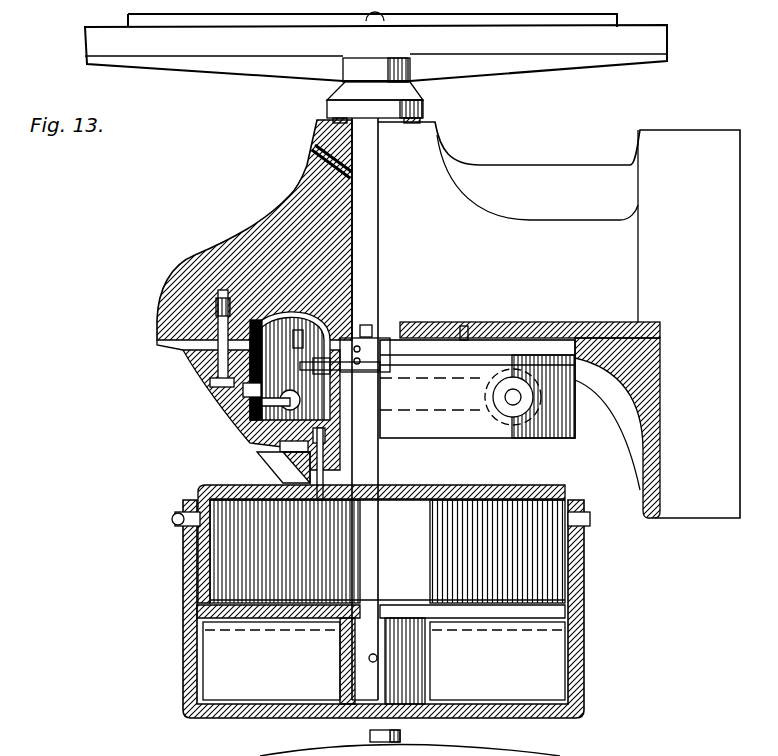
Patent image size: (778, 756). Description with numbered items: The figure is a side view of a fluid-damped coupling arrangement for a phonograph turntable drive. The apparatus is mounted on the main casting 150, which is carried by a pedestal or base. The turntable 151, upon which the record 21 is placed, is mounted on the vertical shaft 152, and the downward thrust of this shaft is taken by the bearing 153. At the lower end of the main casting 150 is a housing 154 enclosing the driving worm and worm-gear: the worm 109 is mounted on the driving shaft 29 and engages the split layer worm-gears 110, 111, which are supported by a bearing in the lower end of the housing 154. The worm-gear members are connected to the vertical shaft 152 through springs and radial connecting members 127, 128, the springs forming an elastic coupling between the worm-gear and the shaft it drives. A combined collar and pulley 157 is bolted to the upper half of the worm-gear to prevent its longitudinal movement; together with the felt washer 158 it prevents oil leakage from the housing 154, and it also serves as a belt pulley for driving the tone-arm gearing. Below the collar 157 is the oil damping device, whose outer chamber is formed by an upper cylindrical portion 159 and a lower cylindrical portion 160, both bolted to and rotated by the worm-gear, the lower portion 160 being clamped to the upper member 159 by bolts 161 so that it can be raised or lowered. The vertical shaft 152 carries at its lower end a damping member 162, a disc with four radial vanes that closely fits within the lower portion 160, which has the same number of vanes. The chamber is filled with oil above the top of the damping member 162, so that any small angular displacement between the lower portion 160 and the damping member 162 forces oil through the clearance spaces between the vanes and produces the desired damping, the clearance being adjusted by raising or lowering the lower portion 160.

The record 21 is at (620, 15).
The turntable 151 is at (640, 46).
The bearing 153 is at (330, 121).
The vertical shaft 152 is at (364, 137).
The main casting 150 is at (530, 172).
The radial connecting member 128 is at (370, 330).
The radial connecting member 127 is at (365, 345).
The housing 154 is at (216, 347).
The split layer worm-gear 111 is at (300, 394).
The split layer worm-gear 110 is at (272, 403).
The washer 158 is at (283, 445).
The combined collar and pulley 157 is at (290, 461).
The upper cylindrical portion 159 is at (212, 490).
The bolts 161 is at (188, 514).
The driving shaft 29 is at (518, 400).
The worm 109 is at (560, 405).
The damping member 162 is at (222, 651).
The lower cylindrical portion 160 is at (196, 672).